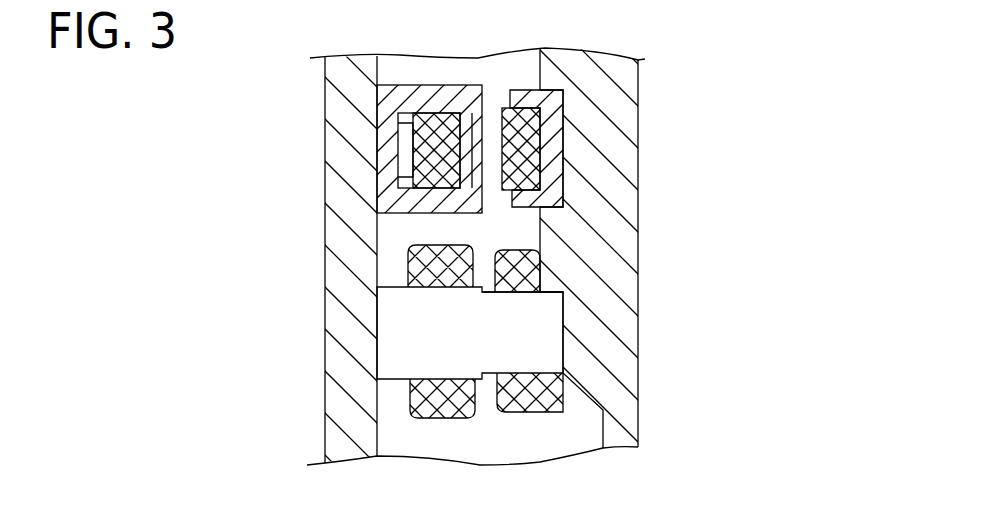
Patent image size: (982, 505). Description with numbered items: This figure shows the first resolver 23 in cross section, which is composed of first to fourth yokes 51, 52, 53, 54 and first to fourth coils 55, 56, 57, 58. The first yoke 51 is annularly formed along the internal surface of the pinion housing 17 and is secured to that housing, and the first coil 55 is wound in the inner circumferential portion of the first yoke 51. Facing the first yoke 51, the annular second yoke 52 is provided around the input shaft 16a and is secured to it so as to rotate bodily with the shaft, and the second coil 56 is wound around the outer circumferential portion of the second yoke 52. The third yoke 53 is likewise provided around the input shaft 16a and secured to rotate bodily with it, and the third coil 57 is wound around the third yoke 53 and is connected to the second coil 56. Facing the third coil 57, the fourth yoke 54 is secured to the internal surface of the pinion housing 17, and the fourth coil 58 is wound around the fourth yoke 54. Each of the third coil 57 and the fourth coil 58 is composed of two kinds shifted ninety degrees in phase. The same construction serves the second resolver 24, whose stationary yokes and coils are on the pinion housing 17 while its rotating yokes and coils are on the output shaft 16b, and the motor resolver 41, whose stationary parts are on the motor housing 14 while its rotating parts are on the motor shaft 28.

The motor housing 14 is at (385, 260).
The pinion housing 17 is at (340, 113).
The input shaft 16a is at (613, 213).
The output shaft 16b is at (588, 260).
The motor shaft 28 is at (588, 260).
The first resolver 23 is at (371, 232).
The second resolver 24 is at (194, 234).
The motor resolver 41 is at (230, 234).
The first yoke 51 is at (402, 100).
The second yoke 52 is at (553, 96).
The third yoke 53 is at (549, 368).
The fourth yoke 54 is at (383, 308).
The first coil 55 is at (437, 133).
The second coil 56 is at (515, 115).
The third coil 57 is at (515, 414).
The fourth coil 58 is at (420, 399).